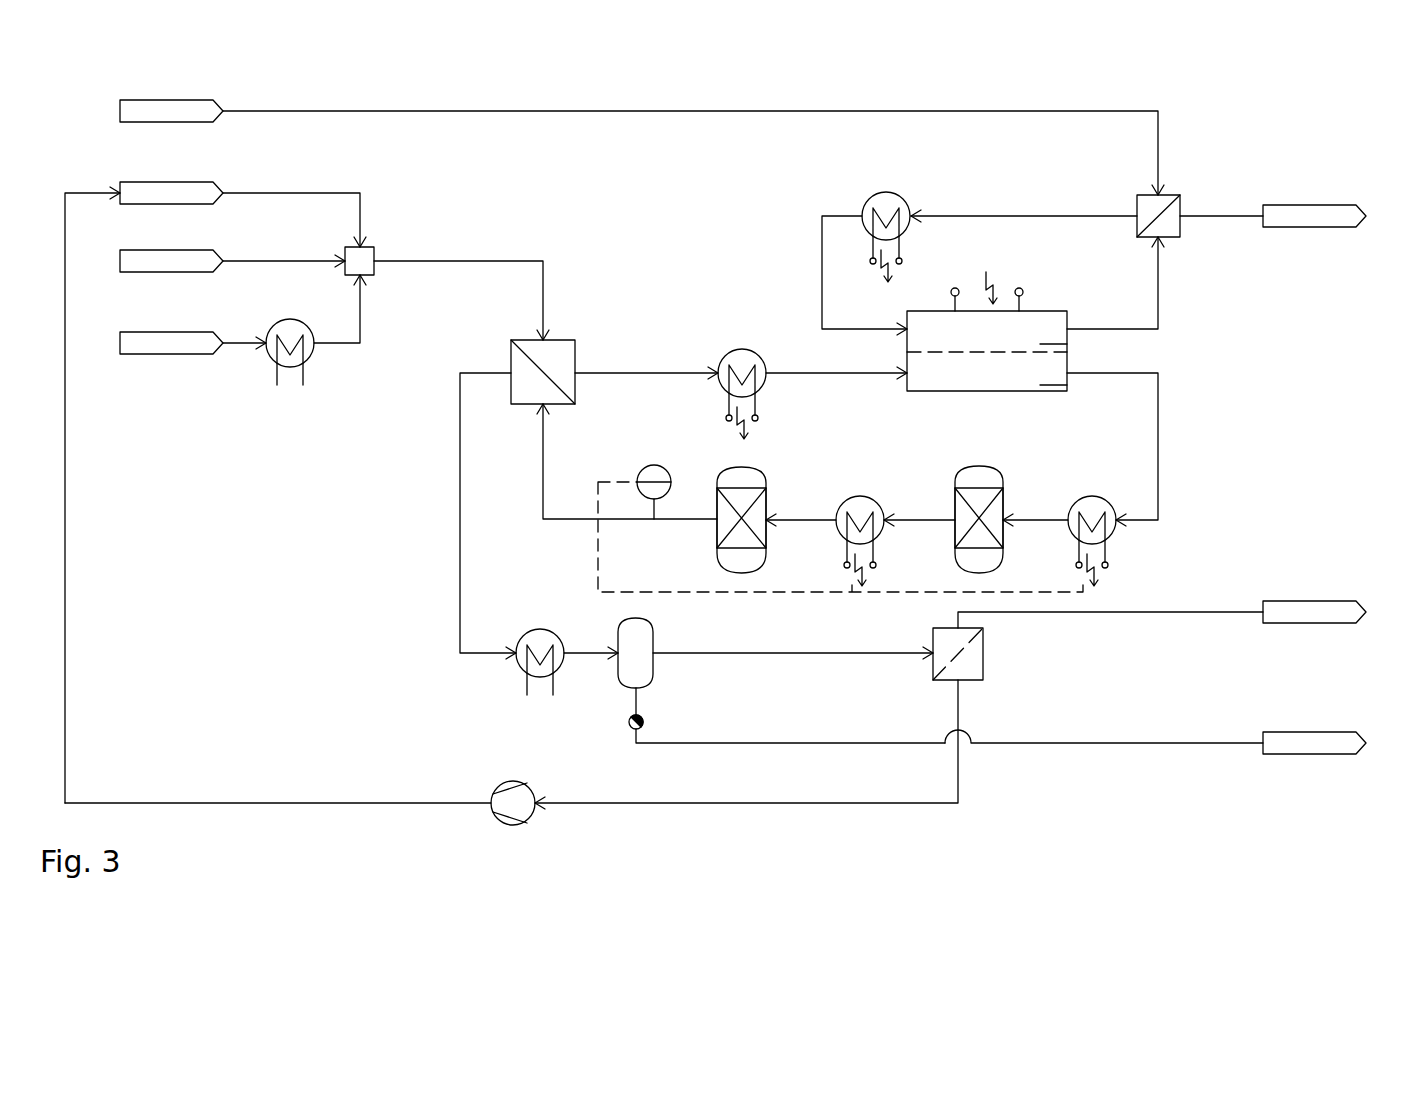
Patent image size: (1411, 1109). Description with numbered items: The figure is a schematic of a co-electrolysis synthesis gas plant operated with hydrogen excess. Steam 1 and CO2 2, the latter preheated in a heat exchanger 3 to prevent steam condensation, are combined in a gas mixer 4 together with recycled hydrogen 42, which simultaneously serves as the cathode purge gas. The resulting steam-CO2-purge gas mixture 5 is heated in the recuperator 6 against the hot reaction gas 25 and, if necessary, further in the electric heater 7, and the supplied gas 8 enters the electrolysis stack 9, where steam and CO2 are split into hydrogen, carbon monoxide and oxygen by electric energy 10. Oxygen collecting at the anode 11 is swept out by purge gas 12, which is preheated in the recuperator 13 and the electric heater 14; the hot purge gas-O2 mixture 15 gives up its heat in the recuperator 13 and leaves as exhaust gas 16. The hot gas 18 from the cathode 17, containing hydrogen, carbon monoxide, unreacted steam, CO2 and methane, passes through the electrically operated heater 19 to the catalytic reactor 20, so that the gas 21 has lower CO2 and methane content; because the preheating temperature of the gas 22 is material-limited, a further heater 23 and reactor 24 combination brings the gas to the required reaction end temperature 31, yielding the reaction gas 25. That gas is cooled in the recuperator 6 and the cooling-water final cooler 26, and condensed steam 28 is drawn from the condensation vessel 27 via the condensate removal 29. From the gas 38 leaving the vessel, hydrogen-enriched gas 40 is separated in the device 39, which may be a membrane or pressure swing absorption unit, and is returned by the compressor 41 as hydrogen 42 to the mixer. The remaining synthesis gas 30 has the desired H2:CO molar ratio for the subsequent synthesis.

The steam 1 is at (232, 246).
The CO2 2 is at (258, 346).
The heat exchanger 3 is at (316, 330).
The gas mixer 4 is at (367, 272).
The steam-CO2-purge gas mixture 5 is at (461, 290).
The recuperator 6 is at (589, 490).
The electric heater 7 is at (742, 381).
The supplied gas 8 is at (836, 386).
The electrolysis stack 9 is at (987, 357).
The electric energy 10 is at (942, 428).
The anode 11 is at (1053, 336).
The purge gas 12 is at (638, 133).
The recuperator 13 is at (1148, 206).
The electric heater 14 is at (979, 251).
The hot purge gas O2 mixture 15 is at (1115, 284).
The exhaust gas 16 is at (1273, 200).
The cathode 17 is at (1053, 377).
The hot gas 18 is at (1112, 449).
The heater 19 is at (1092, 529).
The catalytic reactor 20 is at (979, 508).
The gas after catalytic reactor 21 is at (919, 512).
The gas 22 is at (1035, 512).
The heater 23 is at (825, 529).
The reactor 24 is at (752, 518).
The reaction gas 25 is at (627, 461).
The final cooler 26 is at (567, 653).
The condensation vessel 27 is at (648, 654).
The steam 28 is at (1158, 717).
The condensate removal 29 is at (787, 715).
The synthesis gas 30 is at (1181, 598).
The reaction end temperature 31 is at (840, 522).
The gas 38 is at (793, 646).
The device for hydrogen separation 39 is at (975, 654).
The hydrogen-enriched gas 40 is at (511, 744).
The compressor 41 is at (513, 790).
The hydrogen 42 is at (215, 481).